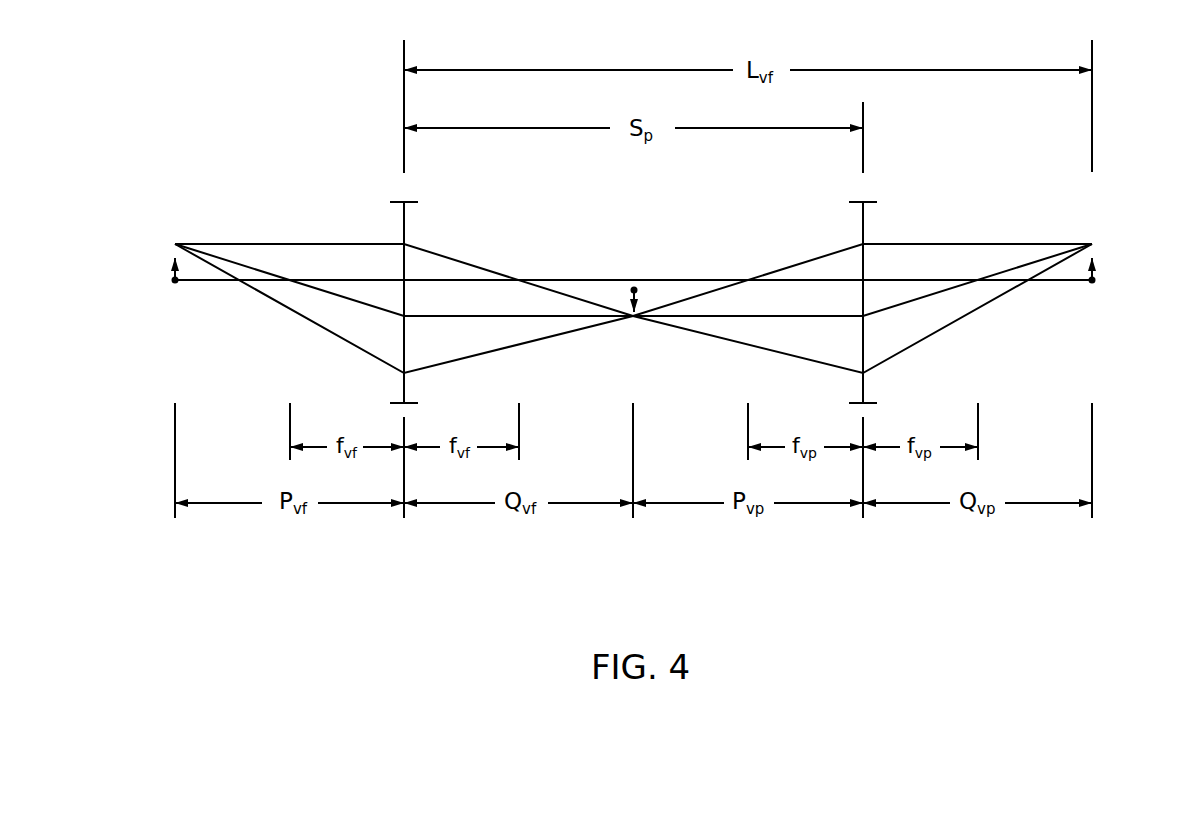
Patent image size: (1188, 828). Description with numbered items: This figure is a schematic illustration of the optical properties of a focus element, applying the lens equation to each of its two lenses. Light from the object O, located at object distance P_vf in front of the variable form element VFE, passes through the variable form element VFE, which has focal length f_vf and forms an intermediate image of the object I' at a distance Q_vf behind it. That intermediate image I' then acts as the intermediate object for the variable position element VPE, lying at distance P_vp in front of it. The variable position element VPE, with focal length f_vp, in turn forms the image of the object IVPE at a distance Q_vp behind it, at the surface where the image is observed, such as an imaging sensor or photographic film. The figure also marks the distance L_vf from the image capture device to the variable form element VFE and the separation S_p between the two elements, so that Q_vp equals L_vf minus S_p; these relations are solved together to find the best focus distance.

The variable form element VFE is at (403, 227).
The variable position element VPE is at (863, 226).
The object O is at (171, 258).
The intermediate image of the object I' is at (653, 277).
The image of the object IVPE is at (1097, 265).